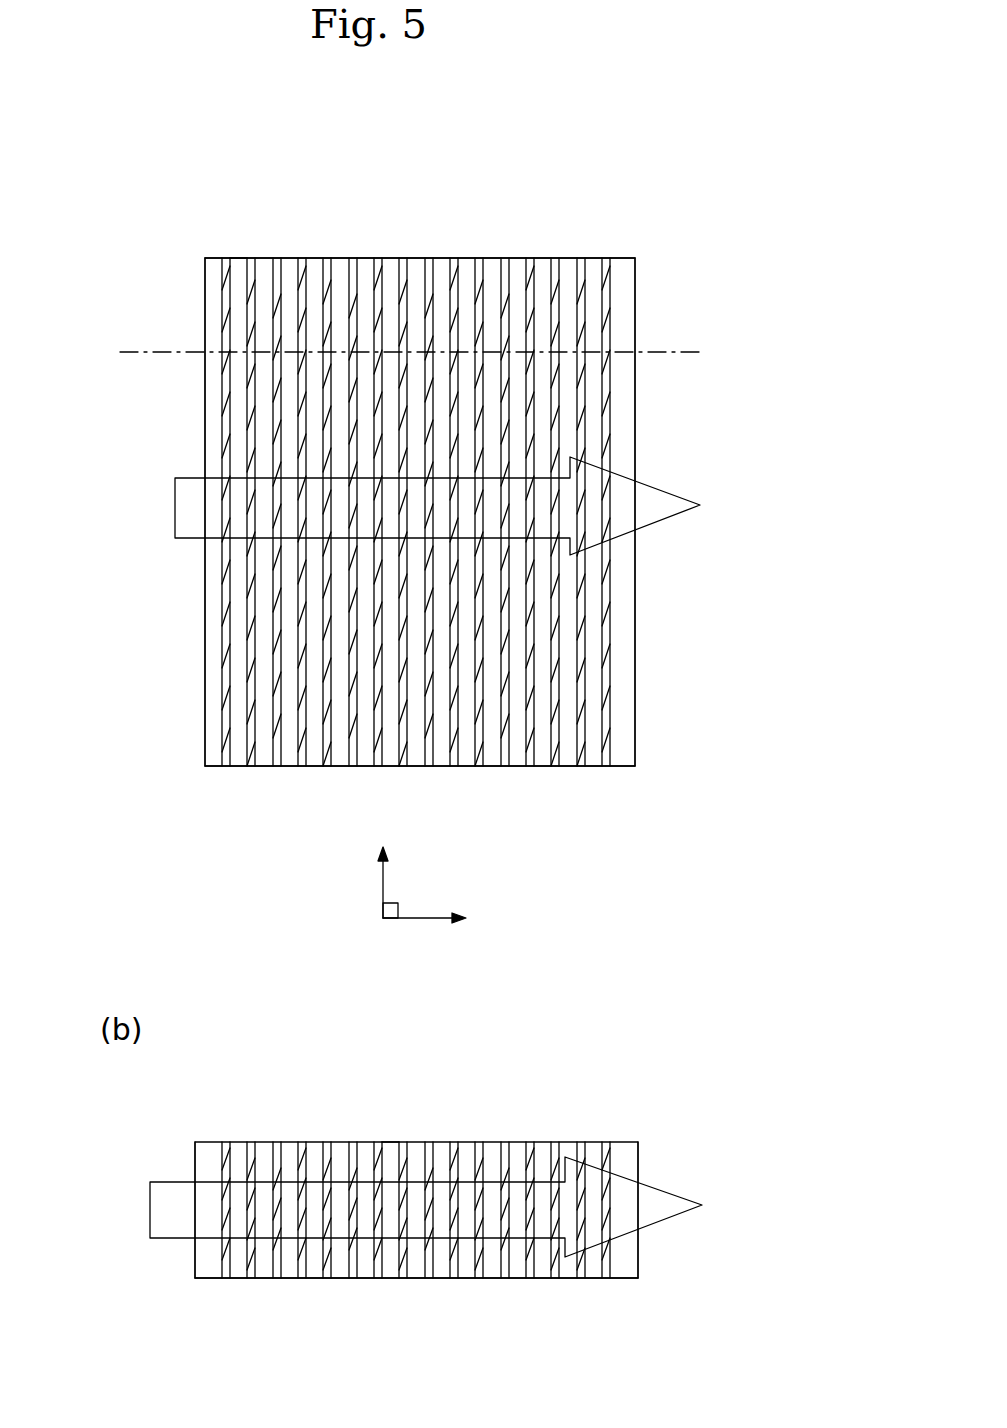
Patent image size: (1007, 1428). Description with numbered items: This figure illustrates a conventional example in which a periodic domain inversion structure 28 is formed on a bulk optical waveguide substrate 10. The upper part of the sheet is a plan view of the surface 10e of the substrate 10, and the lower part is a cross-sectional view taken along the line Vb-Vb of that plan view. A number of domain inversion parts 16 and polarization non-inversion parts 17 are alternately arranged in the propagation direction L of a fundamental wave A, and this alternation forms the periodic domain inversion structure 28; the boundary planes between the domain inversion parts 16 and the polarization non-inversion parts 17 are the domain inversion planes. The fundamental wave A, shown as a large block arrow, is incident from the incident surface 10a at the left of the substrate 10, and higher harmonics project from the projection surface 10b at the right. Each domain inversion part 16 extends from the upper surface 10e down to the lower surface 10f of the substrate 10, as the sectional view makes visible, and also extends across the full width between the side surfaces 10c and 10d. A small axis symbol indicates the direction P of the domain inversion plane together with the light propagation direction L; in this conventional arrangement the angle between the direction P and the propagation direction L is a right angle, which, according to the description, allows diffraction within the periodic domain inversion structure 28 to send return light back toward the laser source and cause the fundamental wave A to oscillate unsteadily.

The bulk optical waveguide substrate 10 is at (635, 258).
The incident surface 10a is at (205, 418).
The projection surface 10b is at (636, 410).
The side surface 10c is at (415, 258).
The side surface 10d is at (490, 770).
The upper surface 10e is at (240, 262).
The lower surface 10f is at (445, 1280).
The domain inversion part 16 is at (228, 258).
The polarization non-inversion part 17 is at (315, 770).
The periodic domain inversion structure 28 is at (581, 252).
The fundamental wave A is at (176, 540).
The line Vb- Vb is at (415, 333).
The direction of the domain inversion plane P is at (380, 880).
The propagation direction L is at (428, 920).